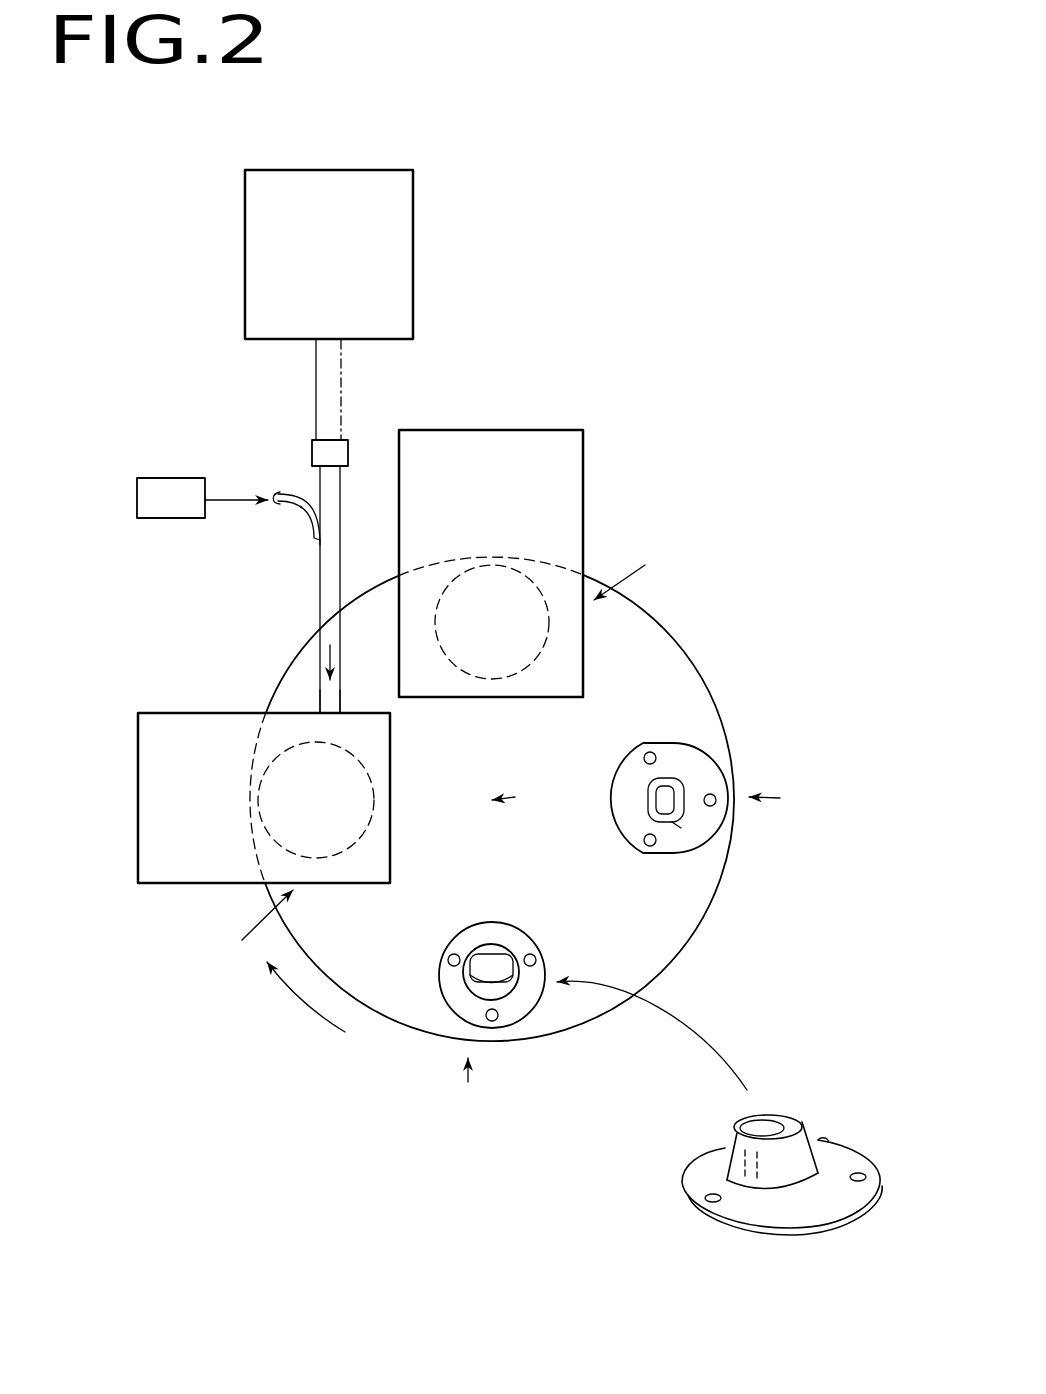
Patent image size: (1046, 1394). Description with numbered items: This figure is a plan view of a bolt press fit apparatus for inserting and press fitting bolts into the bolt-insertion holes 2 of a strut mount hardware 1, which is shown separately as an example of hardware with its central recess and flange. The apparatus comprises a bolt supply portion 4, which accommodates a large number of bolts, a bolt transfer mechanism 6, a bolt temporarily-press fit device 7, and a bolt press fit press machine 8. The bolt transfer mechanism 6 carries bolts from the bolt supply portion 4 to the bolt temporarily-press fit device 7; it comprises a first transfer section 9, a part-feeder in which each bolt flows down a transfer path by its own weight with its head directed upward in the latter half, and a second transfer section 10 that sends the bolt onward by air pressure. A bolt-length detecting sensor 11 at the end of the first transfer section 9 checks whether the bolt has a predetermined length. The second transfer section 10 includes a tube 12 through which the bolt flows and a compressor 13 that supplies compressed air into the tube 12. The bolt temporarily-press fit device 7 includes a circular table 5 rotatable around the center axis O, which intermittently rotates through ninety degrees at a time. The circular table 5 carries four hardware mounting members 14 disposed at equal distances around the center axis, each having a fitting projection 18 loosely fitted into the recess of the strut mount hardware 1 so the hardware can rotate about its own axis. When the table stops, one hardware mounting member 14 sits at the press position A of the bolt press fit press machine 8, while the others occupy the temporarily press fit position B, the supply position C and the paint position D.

The strut mount hardware 1 is at (855, 1150).
The bolt-insertion holes 2 is at (823, 1140).
The bolt supply portion 4 is at (405, 240).
The circular table 5 is at (690, 665).
The bolt transfer mechanism 6 is at (212, 570).
The bolt temporarily-press fit device 7 is at (183, 865).
The bolt press fit press machine 8 is at (575, 508).
The first transfer section 9 is at (366, 388).
The second transfer section 10 is at (314, 617).
The bolt-length detecting sensor 11 is at (312, 452).
The tube 12 is at (320, 691).
The compressor 13 is at (175, 478).
The hardware mounting members 14 is at (437, 1008).
The fitting projection 18 is at (500, 990).